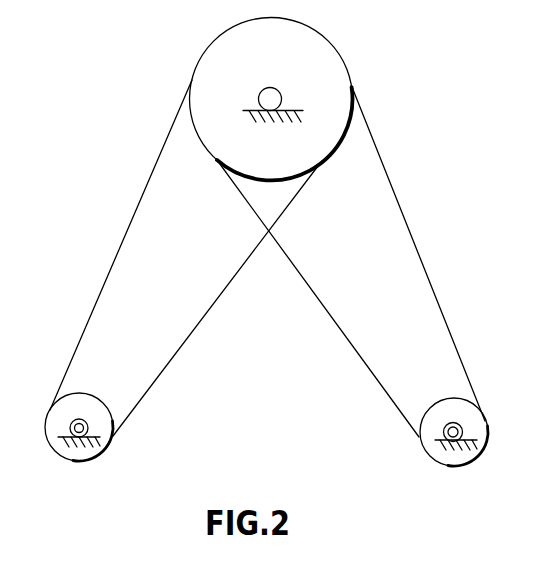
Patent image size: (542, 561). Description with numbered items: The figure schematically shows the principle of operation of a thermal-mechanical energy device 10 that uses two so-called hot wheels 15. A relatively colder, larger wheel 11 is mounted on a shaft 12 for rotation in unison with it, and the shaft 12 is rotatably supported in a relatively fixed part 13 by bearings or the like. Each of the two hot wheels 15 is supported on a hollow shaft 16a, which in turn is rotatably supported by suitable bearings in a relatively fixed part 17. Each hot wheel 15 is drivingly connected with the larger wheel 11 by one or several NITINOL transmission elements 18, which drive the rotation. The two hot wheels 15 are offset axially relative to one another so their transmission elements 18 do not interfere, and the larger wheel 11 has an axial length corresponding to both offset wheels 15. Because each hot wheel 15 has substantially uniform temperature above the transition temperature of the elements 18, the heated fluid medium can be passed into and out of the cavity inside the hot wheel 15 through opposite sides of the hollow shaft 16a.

The thermal-mechanical energy device 10 is at (119, 178).
The larger wheel 11 is at (318, 63).
The shaft 12 is at (269, 88).
The relatively fixed part 13 is at (265, 117).
The hot wheel 15 is at (58, 421).
The hollow shaft 16a is at (85, 421).
The relatively fixed part 17 is at (80, 448).
The transmission element 18 is at (103, 289).